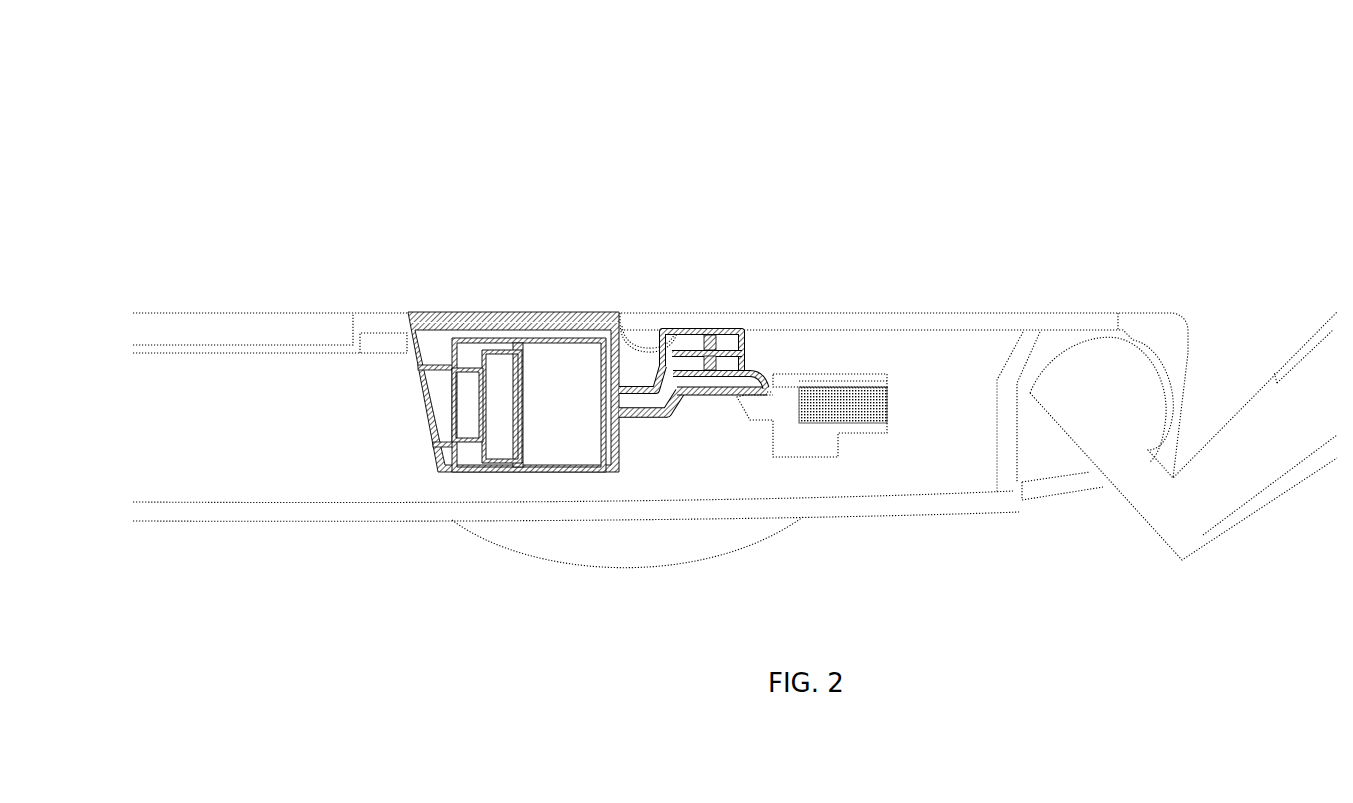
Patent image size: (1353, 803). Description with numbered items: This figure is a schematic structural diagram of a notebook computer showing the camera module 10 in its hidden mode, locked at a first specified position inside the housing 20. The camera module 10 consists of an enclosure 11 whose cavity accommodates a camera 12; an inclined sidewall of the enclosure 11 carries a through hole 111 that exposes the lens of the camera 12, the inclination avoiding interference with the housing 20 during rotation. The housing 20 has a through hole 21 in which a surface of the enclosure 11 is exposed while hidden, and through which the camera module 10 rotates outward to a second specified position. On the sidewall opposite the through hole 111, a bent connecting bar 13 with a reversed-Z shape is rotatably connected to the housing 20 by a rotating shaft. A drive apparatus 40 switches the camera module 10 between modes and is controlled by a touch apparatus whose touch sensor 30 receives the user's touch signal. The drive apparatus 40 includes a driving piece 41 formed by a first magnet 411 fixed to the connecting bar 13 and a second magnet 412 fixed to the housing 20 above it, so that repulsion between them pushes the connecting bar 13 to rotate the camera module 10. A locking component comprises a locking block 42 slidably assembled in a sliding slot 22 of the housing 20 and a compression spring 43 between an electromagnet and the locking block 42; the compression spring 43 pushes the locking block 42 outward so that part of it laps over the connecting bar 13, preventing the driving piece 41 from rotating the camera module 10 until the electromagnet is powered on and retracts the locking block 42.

The camera module 10 is at (328, 265).
The enclosure 11 is at (402, 478).
The through hole 111 is at (387, 415).
The camera 12 is at (513, 470).
The connecting bar 13 is at (657, 418).
The housing 20 is at (993, 305).
The through hole 21 is at (625, 303).
The sliding slot 22 is at (840, 450).
The touch sensor 30 is at (490, 307).
The drive apparatus 40 is at (1020, 120).
The driving piece 41 is at (837, 155).
The first magnet 411 is at (690, 322).
The second magnet 412 is at (731, 345).
The locking block 42 is at (802, 395).
The compression spring 43 is at (882, 387).